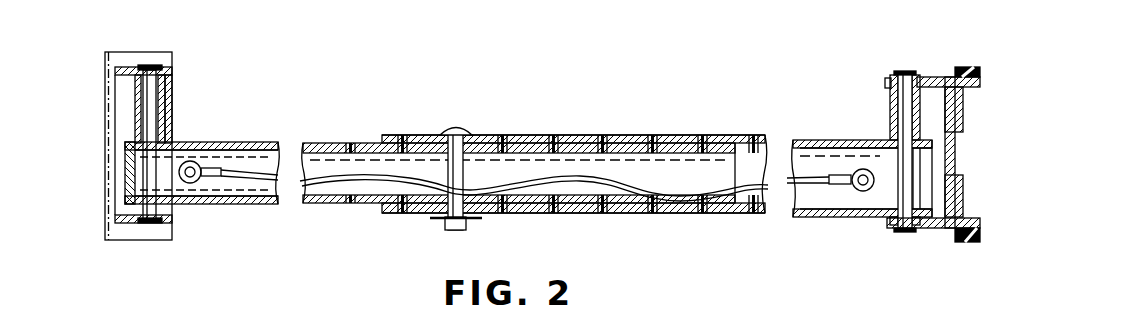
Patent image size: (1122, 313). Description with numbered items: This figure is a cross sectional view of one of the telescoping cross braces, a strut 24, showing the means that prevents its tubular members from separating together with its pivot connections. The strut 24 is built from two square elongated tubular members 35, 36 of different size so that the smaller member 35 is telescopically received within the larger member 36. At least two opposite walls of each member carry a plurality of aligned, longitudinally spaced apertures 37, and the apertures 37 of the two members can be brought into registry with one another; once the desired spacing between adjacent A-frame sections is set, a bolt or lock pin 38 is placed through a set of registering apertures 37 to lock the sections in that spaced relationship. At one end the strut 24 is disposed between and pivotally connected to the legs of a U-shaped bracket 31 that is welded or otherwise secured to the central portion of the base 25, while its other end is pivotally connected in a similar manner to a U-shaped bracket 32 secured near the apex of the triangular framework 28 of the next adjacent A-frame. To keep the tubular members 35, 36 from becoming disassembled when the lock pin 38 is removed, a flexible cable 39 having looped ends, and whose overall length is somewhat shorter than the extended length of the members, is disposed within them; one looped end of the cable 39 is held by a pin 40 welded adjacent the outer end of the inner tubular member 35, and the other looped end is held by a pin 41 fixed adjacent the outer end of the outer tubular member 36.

The strut 24 is at (524, 137).
The base 25 is at (137, 232).
The triangular framework 28 is at (980, 232).
The U-shaped bracket 31 is at (172, 75).
The U-shaped bracket 32 is at (886, 82).
The tubular member 35 is at (326, 143).
The tubular member 36 is at (680, 136).
The apertures 37 is at (410, 208).
The bolt or lock pin 38 is at (452, 128).
The flexible cable 39 is at (302, 189).
The pin 40 is at (193, 184).
The pin 41 is at (856, 186).